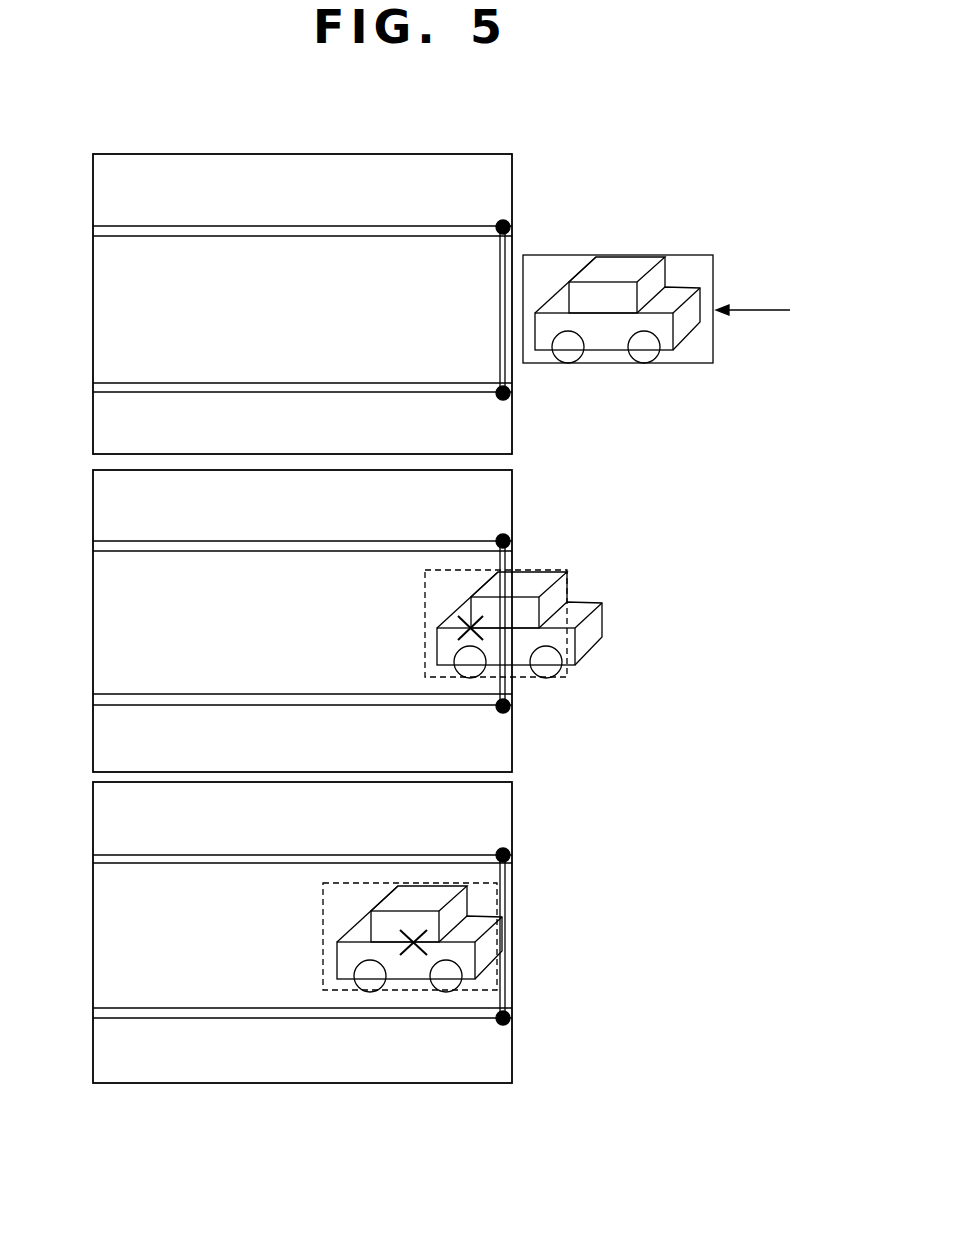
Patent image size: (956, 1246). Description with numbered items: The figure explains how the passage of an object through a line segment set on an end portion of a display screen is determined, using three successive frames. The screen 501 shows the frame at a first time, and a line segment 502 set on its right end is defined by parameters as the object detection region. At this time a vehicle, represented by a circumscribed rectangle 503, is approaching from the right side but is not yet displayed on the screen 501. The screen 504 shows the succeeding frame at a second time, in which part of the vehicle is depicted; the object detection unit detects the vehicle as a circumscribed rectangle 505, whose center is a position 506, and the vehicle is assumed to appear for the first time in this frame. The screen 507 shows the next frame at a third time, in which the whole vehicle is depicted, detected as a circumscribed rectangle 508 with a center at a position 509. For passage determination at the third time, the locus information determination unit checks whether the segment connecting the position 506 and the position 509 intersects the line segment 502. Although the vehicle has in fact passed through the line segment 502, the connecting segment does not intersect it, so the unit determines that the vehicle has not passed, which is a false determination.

The screen 501 is at (512, 178).
The line segment 502 is at (507, 243).
The circumscribed rectangle 503 is at (592, 255).
The screen 504 is at (512, 492).
The circumscribed rectangle 505 is at (478, 568).
The position 506 is at (470, 627).
The screen 507 is at (512, 812).
The circumscribed rectangle 508 is at (480, 882).
The position 509 is at (415, 942).